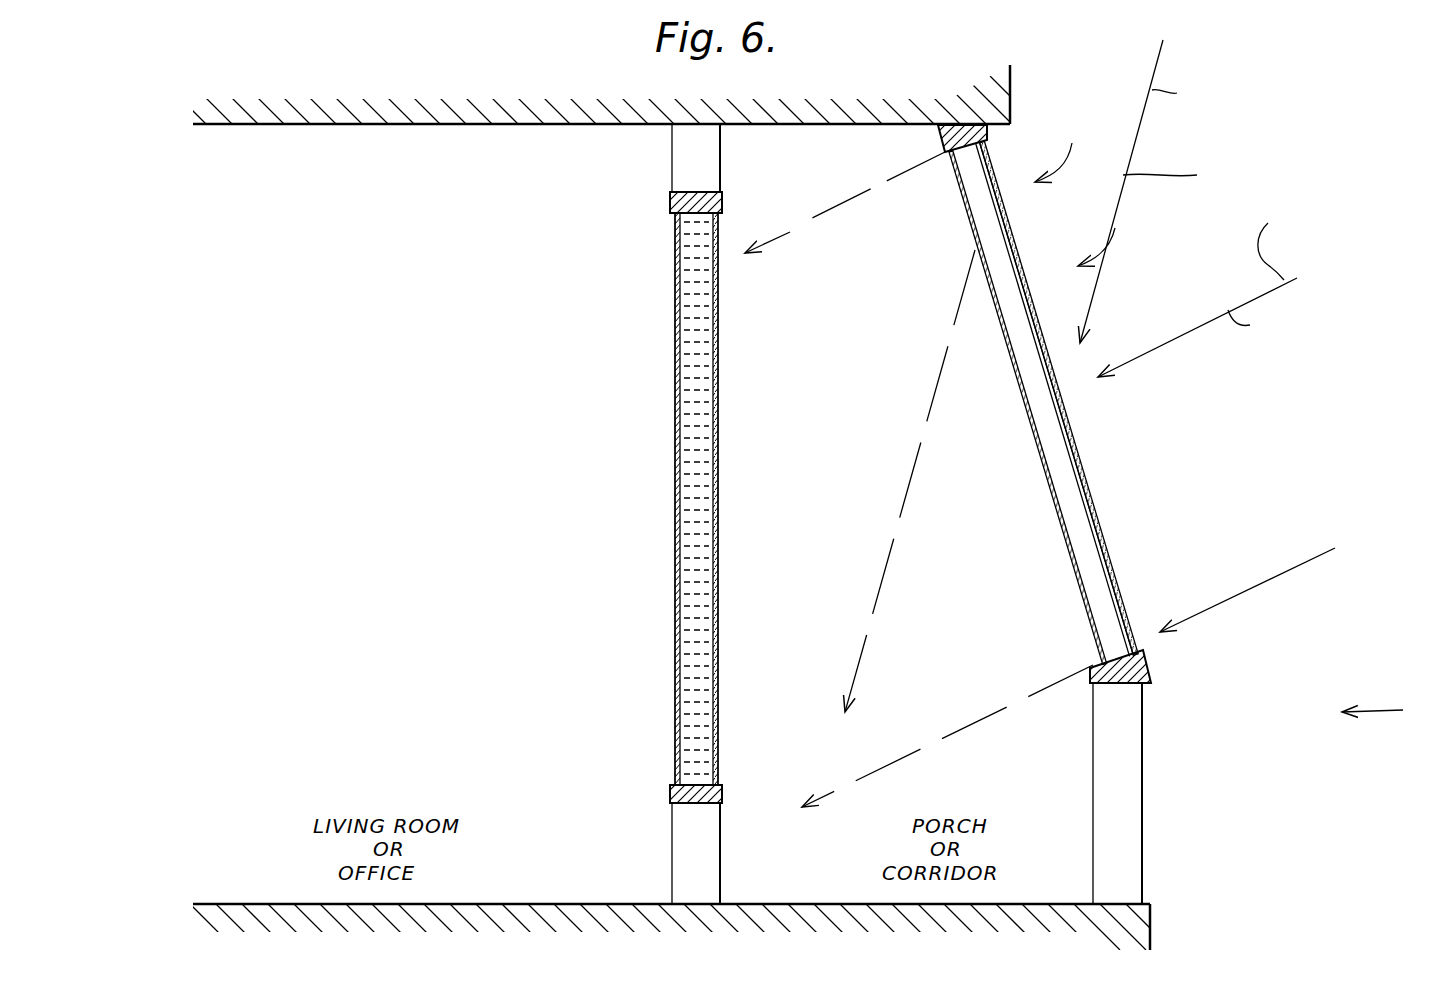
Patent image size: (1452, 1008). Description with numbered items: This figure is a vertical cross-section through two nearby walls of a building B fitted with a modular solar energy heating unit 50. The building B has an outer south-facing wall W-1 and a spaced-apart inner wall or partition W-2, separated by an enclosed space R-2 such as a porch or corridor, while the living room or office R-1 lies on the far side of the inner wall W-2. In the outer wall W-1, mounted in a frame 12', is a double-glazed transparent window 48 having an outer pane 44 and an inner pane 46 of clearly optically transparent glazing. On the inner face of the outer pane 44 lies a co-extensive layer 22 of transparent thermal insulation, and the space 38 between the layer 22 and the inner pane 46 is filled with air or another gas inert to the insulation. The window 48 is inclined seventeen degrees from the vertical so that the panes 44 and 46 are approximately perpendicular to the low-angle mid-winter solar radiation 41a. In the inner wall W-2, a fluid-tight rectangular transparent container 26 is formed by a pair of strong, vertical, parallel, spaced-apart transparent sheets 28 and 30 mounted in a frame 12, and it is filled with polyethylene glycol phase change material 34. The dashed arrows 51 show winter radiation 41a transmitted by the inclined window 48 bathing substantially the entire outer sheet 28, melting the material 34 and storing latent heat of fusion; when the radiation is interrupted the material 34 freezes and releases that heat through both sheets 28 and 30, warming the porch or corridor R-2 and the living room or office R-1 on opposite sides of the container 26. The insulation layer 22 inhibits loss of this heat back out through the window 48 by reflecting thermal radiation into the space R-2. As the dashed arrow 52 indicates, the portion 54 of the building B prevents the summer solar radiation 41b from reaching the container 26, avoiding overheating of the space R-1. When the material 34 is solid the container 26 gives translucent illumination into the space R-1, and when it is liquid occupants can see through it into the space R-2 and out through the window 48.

The frame 12 is at (657, 497).
The frame 12' is at (1047, 409).
The layer of transparent thermal insulation 22 is at (1082, 520).
The fluid-tight transparent container 26 is at (709, 206).
The outer transparent sheet 28 is at (707, 499).
The inner transparent sheet 30 is at (680, 390).
The polyethylene glycol phase change material 34 is at (696, 296).
The space between insulation layer and inner pane 38 is at (1075, 402).
The mid-winter solar radiation 41a is at (1183, 333).
The summer solar radiation 41b is at (1107, 247).
The outer pane 44 is at (1085, 470).
The inner pane 46 is at (1072, 565).
The double-glazed transparent window 48 is at (1084, 234).
The modular solar energy heating unit 50 is at (1068, 147).
The dashed arrows of transmitted winter radiation 51 is at (827, 205).
The dashed arrow of summer radiation 52 is at (890, 540).
The portion of the building 54 is at (1010, 97).
The outer south-facing wall W-1 is at (1120, 800).
The inner wall W-2 is at (668, 158).
The enclosed living or work space R-1 is at (393, 434).
The enclosed space between walls R-2 is at (798, 434).
The building B is at (1379, 713).